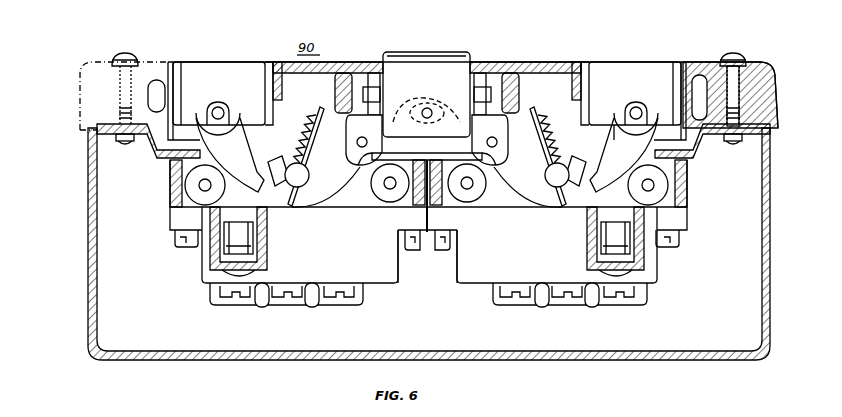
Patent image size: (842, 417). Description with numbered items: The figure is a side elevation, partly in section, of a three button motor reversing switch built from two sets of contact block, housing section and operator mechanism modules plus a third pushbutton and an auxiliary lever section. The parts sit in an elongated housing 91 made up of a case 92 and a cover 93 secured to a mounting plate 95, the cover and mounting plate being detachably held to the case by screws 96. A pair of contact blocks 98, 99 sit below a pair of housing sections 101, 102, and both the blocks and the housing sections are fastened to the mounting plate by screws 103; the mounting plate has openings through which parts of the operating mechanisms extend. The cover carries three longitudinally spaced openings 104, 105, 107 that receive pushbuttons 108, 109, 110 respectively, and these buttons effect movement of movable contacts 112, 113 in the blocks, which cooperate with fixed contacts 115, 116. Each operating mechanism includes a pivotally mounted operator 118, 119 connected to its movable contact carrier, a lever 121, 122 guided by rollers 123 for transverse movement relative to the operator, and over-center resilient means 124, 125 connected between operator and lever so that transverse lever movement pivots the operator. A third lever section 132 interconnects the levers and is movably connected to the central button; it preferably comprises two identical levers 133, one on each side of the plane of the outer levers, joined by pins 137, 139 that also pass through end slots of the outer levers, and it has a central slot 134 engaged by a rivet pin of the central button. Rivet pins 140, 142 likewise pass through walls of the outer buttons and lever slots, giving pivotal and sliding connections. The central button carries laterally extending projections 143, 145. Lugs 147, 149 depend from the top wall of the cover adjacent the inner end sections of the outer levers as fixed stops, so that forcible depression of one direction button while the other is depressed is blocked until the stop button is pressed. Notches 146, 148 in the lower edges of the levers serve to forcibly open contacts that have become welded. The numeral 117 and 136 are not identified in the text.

The housing 91 is at (78, 101).
The case 92 is at (658, 362).
The cover 93 is at (528, 62).
The mounting plate 95 is at (712, 158).
The screws 96 is at (133, 56).
The contact block 98 is at (392, 284).
The contact block 99 is at (466, 284).
The housing section 101 is at (170, 170).
The housing section 102 is at (688, 200).
The screws 103 is at (176, 240).
The opening 104 is at (176, 66).
The opening 105 is at (392, 54).
The opening 107 is at (594, 66).
The pushbutton 108 is at (238, 62).
The pushbutton 109 is at (436, 56).
The pushbutton 110 is at (648, 62).
The movable contact 112 is at (230, 228).
The movable contact 113 is at (626, 230).
The fixed contact 115 is at (270, 235).
The fixed contact 116 is at (586, 239).
The right ball 117 is at (557, 175).
The operator 118 is at (310, 112).
The operator 119 is at (548, 112).
The lever 121 is at (312, 140).
The lever 122 is at (610, 130).
The rollers 123 is at (186, 186).
The over-center resilient means 124 is at (303, 118).
The over-center resilient means 125 is at (550, 118).
The third lever section 132 is at (503, 164).
The levers 133 is at (340, 182).
The central slot 134 is at (448, 104).
The pivot pin 136 is at (425, 108).
The pin 137 is at (368, 142).
The pin 139 is at (486, 142).
The rivet pin 140 is at (226, 106).
The rivet pin 142 is at (640, 106).
The projection 143 is at (369, 74).
The projection 145 is at (485, 74).
The notch 146 is at (263, 183).
The lug 147 is at (336, 104).
The notch 148 is at (590, 186).
The lug 149 is at (520, 104).